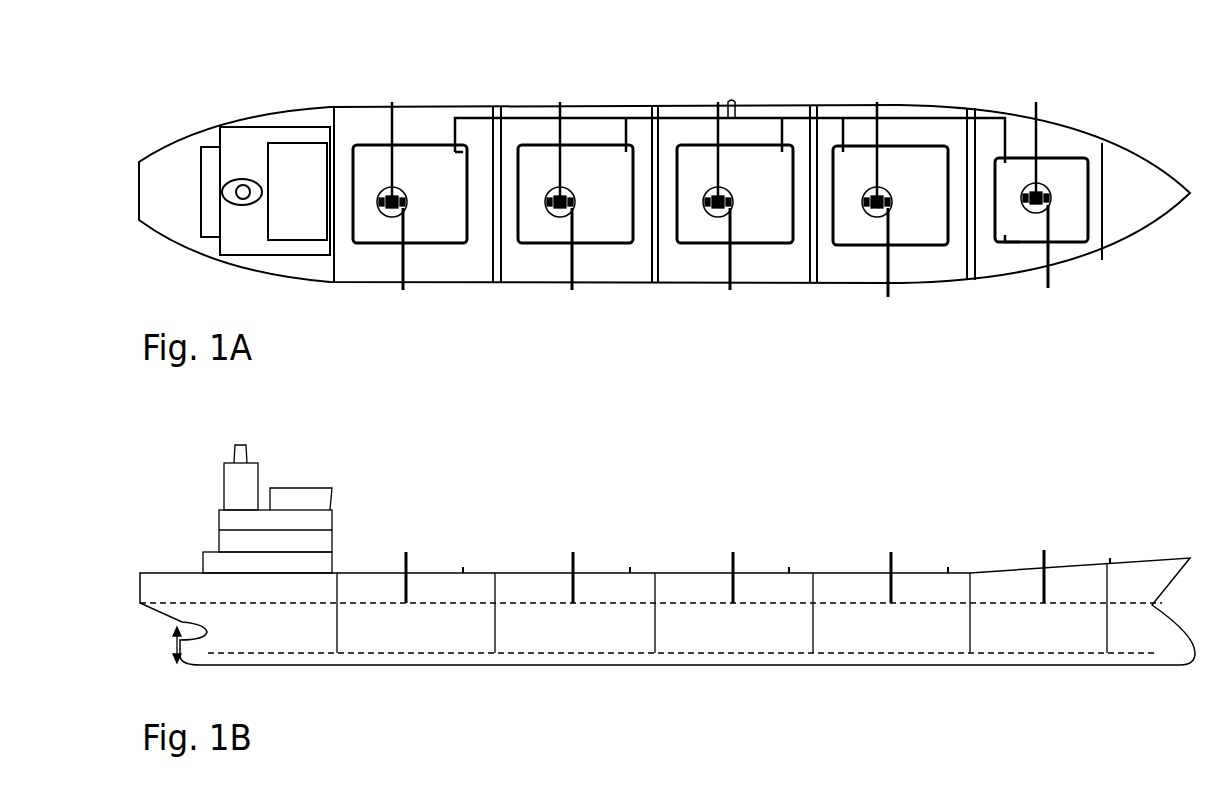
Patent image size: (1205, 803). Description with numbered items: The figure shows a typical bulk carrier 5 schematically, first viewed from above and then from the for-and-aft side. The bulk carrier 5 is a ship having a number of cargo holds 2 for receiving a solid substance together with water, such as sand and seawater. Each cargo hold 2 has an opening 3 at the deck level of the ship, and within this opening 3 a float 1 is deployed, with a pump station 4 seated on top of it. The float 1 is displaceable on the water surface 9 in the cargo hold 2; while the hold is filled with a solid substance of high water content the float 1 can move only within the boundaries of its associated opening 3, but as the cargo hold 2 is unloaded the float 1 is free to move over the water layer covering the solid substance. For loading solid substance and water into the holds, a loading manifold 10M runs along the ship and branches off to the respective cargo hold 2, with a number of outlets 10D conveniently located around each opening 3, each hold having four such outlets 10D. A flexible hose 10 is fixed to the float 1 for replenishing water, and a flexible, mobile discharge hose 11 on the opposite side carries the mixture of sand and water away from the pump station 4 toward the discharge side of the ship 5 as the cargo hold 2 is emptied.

In FIG. 1A, the float 1 is at (385, 213).
In FIG. 1B, the float 1 is at (1200, 507).
In FIG. 1A, the cargo hold 2 is at (597, 230).
In FIG. 1B, the cargo hold 2 is at (530, 621).
In FIG. 1A, the opening 3 is at (424, 181).
In FIG. 1A, the pump station 4 is at (870, 220).
In FIG. 1A, the bulk carrier 5 is at (1077, 125).
In FIG. 1B, the bulk carrier 5 is at (1070, 503).
In FIG. 1A, the water surface 9 is at (926, 209).
In FIG. 1A, the flexible hose 10 is at (1032, 127).
In FIG. 1A, the loading manifold 10M is at (749, 117).
In FIG. 1A, the outlets 10D is at (1017, 243).
In FIG. 1A, the discharge hose 11 is at (1050, 263).
In FIG. 1B, the discharge hose 11 is at (737, 587).